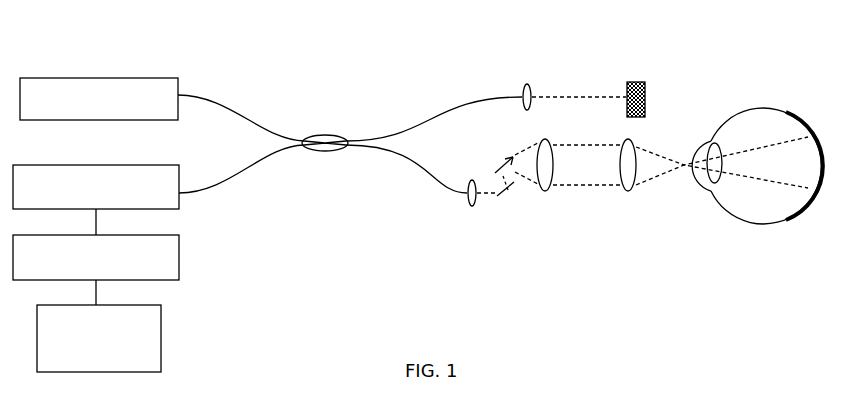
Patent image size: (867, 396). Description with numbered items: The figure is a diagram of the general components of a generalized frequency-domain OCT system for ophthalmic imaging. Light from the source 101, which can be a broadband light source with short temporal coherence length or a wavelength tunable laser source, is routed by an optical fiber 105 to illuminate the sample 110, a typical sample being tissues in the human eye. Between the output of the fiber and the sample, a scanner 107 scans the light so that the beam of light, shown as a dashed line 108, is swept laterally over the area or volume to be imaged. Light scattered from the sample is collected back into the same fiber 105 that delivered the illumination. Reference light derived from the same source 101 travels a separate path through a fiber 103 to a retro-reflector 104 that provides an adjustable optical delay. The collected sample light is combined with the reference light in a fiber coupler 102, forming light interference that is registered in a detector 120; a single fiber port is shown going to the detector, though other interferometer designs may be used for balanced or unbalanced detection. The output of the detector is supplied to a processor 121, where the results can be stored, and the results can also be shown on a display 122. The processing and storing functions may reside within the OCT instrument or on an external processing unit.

The light source 101 is at (97, 76).
The detector 120 is at (184, 173).
The processor 121 is at (184, 259).
The display 122 is at (170, 340).
The fiber coupler 102 is at (317, 155).
The fiber 103 is at (437, 107).
The optical fiber 105 is at (418, 195).
The retro-reflector 104 is at (642, 70).
The scanner 107 is at (515, 203).
The beam of light 108 is at (760, 185).
The sample 110 is at (783, 103).